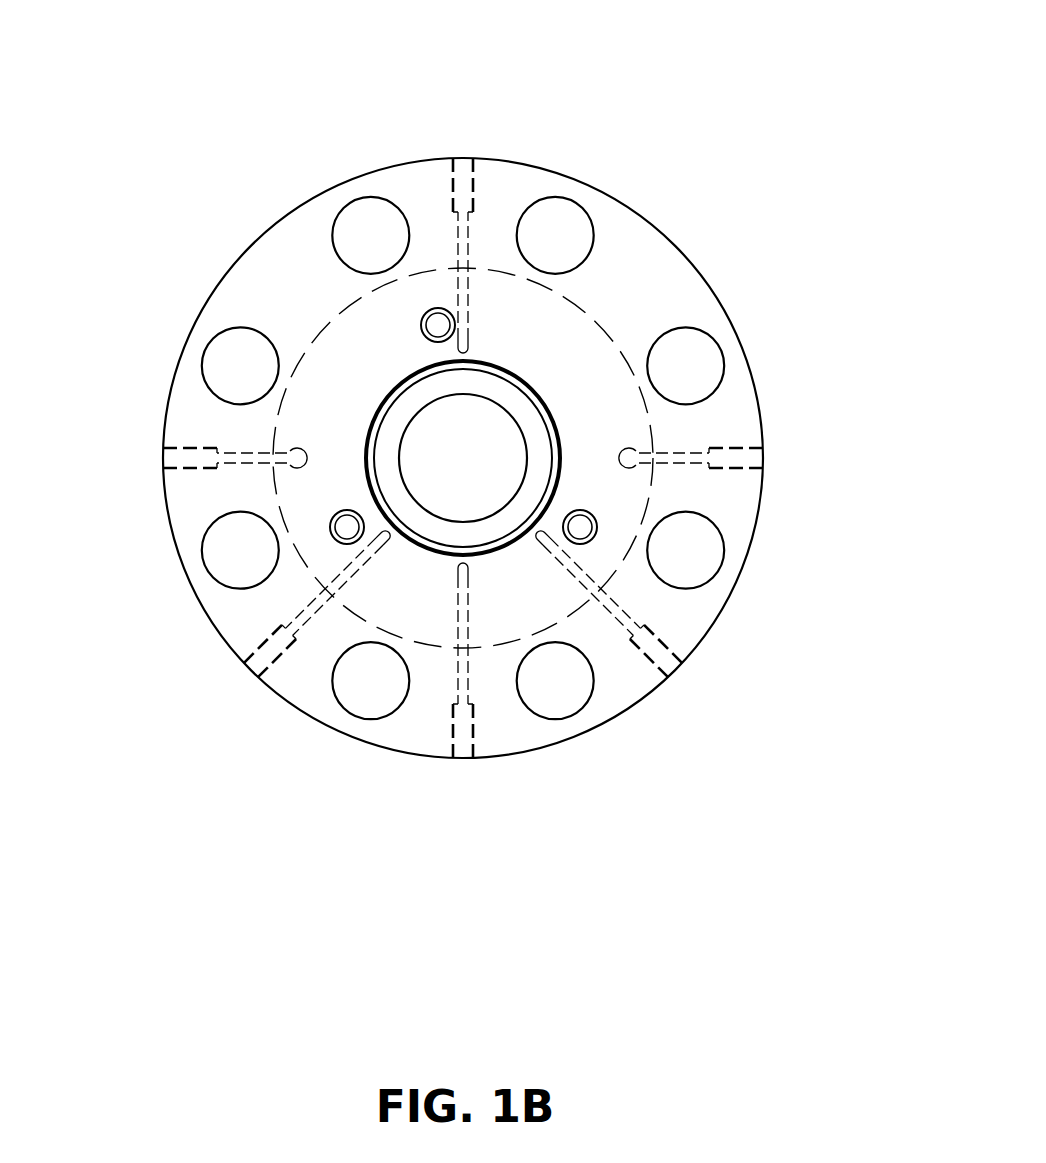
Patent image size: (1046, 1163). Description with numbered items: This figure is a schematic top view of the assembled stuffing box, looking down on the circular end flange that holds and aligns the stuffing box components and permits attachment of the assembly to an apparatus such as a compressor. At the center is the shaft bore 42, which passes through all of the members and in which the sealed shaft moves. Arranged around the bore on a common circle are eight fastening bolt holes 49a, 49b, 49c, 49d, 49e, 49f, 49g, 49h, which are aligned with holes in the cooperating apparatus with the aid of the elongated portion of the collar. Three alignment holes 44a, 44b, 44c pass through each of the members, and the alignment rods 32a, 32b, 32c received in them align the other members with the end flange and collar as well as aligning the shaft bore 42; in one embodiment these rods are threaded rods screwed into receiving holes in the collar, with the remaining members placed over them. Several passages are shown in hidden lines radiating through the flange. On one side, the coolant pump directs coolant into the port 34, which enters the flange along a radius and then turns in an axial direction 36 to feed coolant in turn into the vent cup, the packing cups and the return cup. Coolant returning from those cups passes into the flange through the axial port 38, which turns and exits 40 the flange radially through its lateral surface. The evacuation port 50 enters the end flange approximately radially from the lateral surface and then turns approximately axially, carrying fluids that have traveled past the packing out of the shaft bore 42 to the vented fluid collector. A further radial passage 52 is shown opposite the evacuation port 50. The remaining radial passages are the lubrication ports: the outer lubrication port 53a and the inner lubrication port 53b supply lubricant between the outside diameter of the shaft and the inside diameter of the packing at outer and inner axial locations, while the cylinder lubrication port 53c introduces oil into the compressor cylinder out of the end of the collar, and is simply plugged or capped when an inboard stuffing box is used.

The alignment rod 32a is at (438, 322).
The alignment rod 32b is at (582, 527).
The alignment rod 32c is at (345, 530).
The port 34 is at (760, 457).
The axial direction 36 is at (636, 453).
The axial port 38 is at (292, 455).
The exit 40 is at (178, 460).
The shaft bore 42 is at (493, 422).
The alignment hole 44a is at (421, 321).
The alignment hole 44b is at (592, 545).
The alignment hole 44c is at (333, 520).
The fastening bolt hole 49a is at (238, 360).
The fastening bolt hole 49b is at (370, 228).
The fastening bolt hole 49c is at (558, 217).
The fastening bolt hole 49d is at (695, 355).
The fastening bolt hole 49e is at (695, 557).
The fastening bolt hole 49f is at (558, 690).
The fastening bolt hole 49g is at (368, 690).
The fastening bolt hole 49h is at (235, 558).
The evacuation port 50 is at (463, 160).
The radial slot 52 is at (464, 562).
The outer lubrication port 53a is at (385, 537).
The inner lubrication port 53b is at (463, 753).
The cylinder lubrication port 53c is at (673, 670).